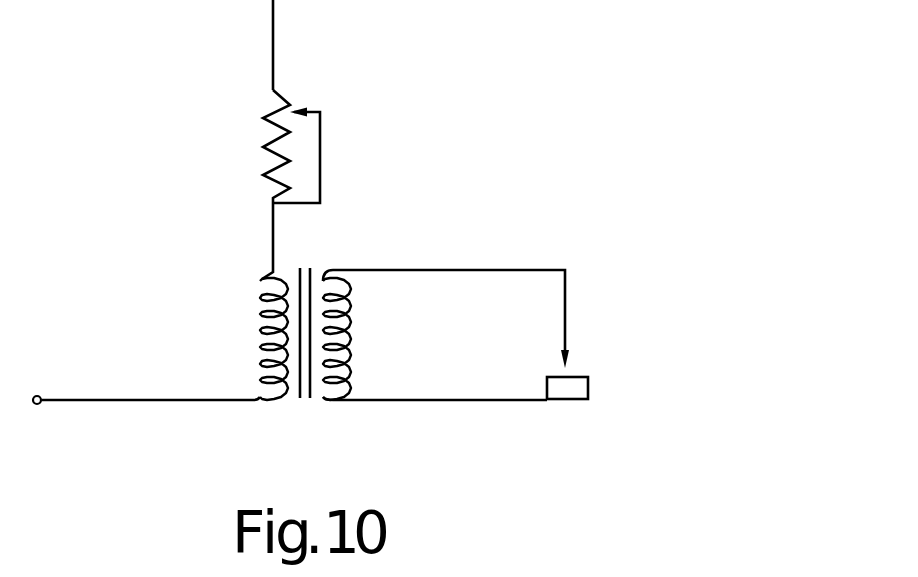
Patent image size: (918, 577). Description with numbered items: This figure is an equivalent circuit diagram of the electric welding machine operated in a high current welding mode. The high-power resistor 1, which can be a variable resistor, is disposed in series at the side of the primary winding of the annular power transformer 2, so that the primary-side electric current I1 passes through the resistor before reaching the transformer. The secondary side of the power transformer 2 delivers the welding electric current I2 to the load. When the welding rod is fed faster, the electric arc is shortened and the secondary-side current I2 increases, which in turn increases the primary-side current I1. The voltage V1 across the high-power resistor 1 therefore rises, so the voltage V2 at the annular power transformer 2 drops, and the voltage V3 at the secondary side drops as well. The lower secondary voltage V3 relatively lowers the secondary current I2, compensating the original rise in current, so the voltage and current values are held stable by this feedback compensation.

The high-power resistor 1 is at (298, 146).
The power transformer 2 is at (300, 378).
The voltage at the high-power resistor V1 is at (242, 146).
The voltage at the annular power transformer V2 is at (243, 339).
The voltage at the secondary side V3 is at (363, 339).
The electric current at the primary side I1 is at (292, 45).
The electric current at the secondary side I2 is at (455, 313).